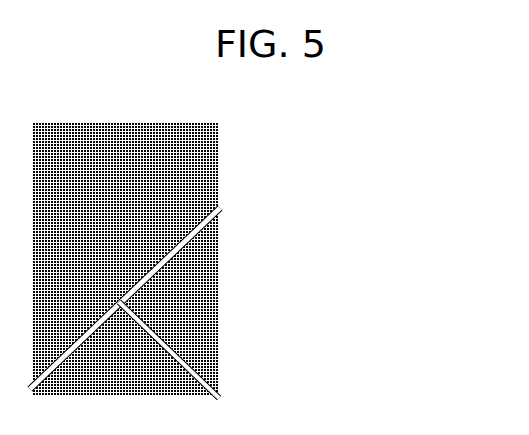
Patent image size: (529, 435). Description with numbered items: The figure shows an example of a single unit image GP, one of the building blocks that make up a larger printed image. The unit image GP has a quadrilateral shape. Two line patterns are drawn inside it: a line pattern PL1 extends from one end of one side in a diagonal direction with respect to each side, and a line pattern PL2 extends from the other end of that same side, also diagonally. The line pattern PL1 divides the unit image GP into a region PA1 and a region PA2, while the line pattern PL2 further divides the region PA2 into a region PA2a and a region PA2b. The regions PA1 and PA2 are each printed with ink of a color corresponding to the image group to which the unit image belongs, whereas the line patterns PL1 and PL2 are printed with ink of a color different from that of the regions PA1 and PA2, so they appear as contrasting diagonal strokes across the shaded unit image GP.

The unit image GP is at (276, 257).
The region PA1 is at (190, 160).
The line pattern PL1 is at (188, 243).
The region PA2 is at (241, 303).
The region PA2a is at (190, 299).
The region PA2b is at (135, 349).
The line pattern PL2 is at (190, 367).